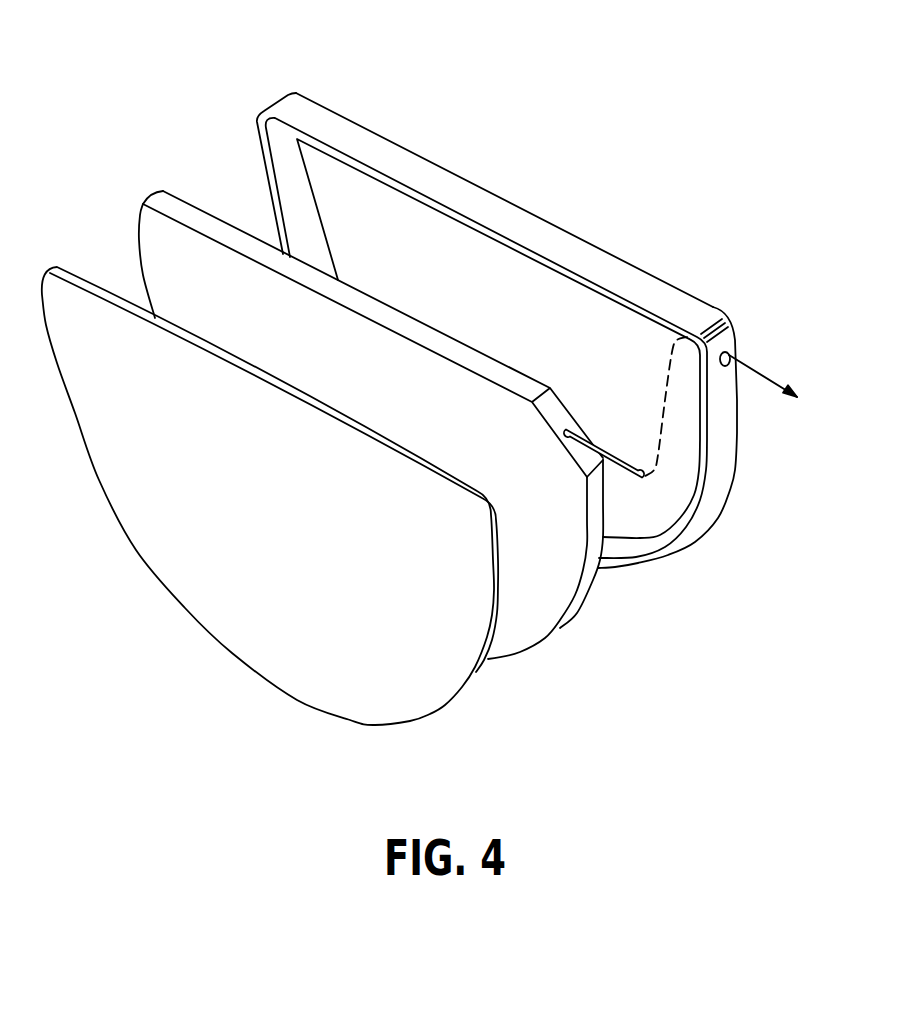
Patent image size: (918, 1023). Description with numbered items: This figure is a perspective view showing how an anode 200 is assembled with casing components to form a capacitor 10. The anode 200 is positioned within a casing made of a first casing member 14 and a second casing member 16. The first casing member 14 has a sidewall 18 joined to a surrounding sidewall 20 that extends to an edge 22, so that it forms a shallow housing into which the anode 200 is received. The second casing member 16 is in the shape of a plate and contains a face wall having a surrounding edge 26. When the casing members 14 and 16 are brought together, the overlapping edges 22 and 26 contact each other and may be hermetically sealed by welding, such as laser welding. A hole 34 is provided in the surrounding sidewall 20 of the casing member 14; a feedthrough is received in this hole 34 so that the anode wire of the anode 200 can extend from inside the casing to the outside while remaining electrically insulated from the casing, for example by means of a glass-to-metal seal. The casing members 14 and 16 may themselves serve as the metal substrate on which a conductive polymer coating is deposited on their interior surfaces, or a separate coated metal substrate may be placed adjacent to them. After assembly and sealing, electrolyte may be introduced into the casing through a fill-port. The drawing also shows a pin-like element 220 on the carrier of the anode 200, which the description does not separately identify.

The capacitor 10 is at (556, 85).
The first casing member 14 is at (551, 338).
The second casing member 16 is at (250, 632).
The sidewall 18 is at (380, 195).
The surrounding sidewall 20 is at (522, 223).
The edge 22 is at (467, 227).
The surrounding edge 26 is at (285, 392).
The hole 34 is at (733, 352).
The anode 200 is at (536, 628).
The peg 220 is at (621, 466).